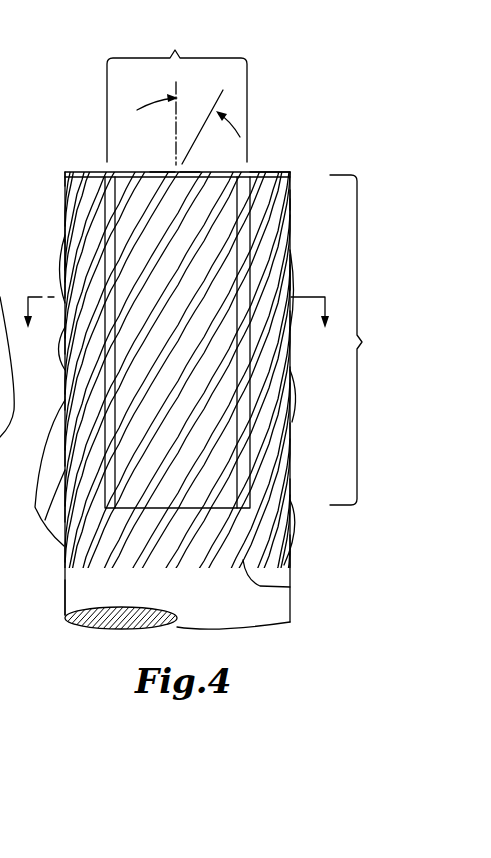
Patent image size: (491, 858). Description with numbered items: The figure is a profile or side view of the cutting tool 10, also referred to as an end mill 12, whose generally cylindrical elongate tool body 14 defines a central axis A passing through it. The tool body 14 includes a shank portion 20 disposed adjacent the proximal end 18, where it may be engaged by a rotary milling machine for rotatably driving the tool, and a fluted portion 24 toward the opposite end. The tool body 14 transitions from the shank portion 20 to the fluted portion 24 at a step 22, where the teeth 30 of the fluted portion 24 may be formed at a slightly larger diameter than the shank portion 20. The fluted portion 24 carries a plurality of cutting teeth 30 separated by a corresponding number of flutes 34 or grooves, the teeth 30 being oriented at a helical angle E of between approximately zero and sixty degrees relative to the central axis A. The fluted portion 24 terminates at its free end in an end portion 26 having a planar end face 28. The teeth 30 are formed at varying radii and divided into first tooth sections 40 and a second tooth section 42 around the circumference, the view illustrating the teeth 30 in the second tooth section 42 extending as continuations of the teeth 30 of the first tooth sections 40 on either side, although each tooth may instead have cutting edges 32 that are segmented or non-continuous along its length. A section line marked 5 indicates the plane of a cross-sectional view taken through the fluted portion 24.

The cutting tool 10 is at (200, 361).
The end mill 12 is at (266, 137).
The tool body 14 is at (299, 405).
The proximal end 18 is at (7, 314).
The shank portion 20 is at (290, 604).
The step 22 is at (290, 587).
The fluted portion 24 is at (292, 557).
The end portion 26 is at (288, 173).
The planar end face 28 is at (192, 165).
The teeth 30 is at (288, 277).
The cutting edge 32 is at (292, 412).
The flutes 34 is at (193, 230).
The first tooth sections 40 is at (63, 263).
The second tooth section 42 is at (251, 265).
The central axis A is at (176, 85).
The helical angle E is at (211, 127).
The section line 5- 5 is at (176, 327).